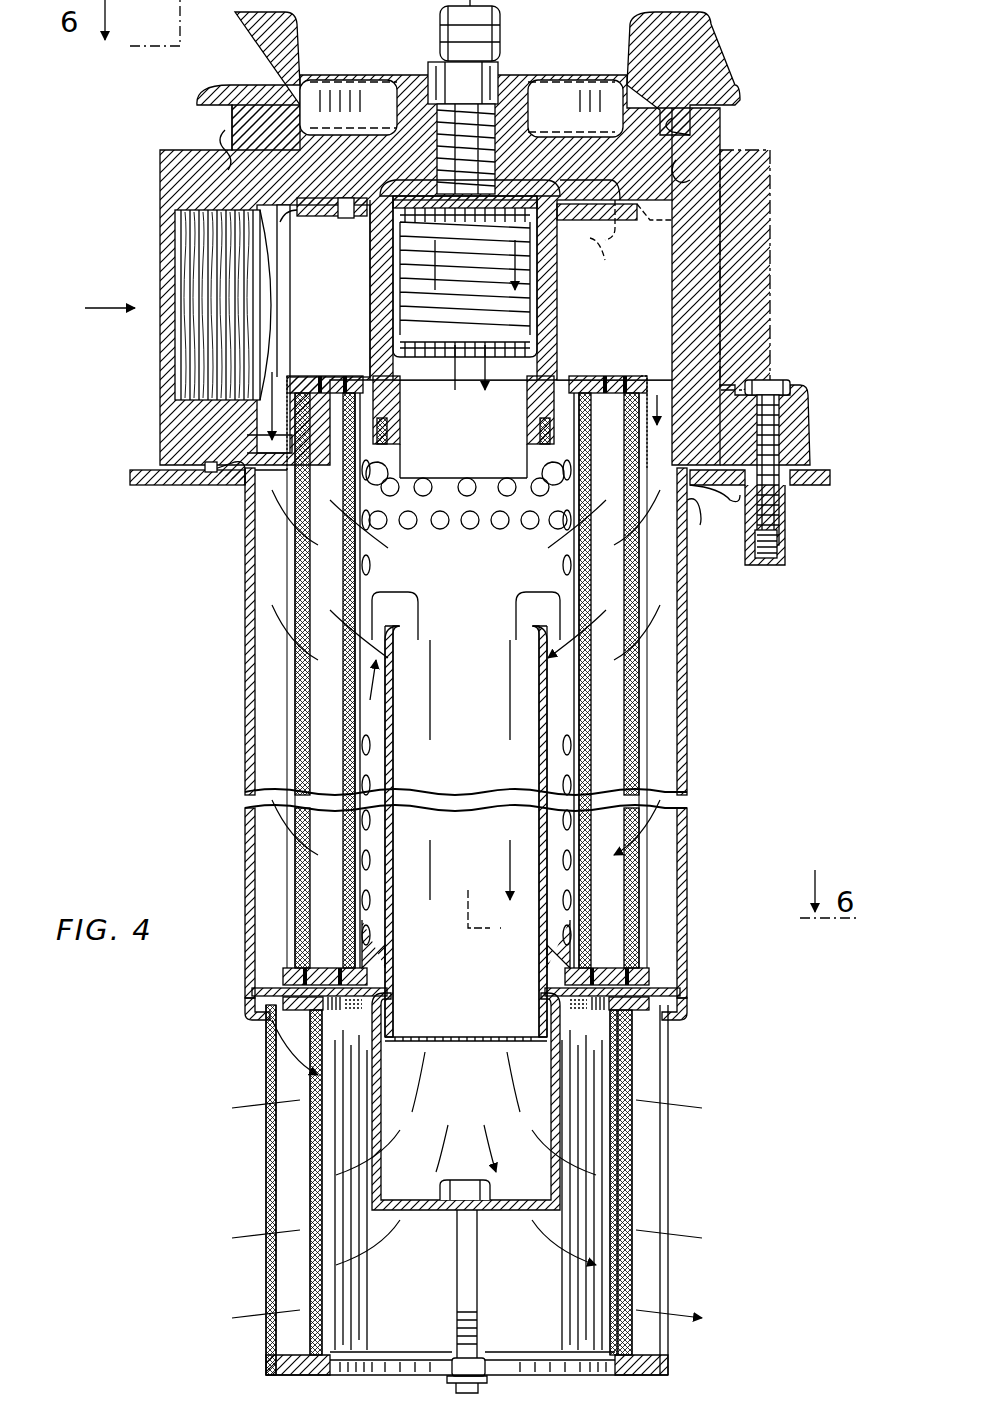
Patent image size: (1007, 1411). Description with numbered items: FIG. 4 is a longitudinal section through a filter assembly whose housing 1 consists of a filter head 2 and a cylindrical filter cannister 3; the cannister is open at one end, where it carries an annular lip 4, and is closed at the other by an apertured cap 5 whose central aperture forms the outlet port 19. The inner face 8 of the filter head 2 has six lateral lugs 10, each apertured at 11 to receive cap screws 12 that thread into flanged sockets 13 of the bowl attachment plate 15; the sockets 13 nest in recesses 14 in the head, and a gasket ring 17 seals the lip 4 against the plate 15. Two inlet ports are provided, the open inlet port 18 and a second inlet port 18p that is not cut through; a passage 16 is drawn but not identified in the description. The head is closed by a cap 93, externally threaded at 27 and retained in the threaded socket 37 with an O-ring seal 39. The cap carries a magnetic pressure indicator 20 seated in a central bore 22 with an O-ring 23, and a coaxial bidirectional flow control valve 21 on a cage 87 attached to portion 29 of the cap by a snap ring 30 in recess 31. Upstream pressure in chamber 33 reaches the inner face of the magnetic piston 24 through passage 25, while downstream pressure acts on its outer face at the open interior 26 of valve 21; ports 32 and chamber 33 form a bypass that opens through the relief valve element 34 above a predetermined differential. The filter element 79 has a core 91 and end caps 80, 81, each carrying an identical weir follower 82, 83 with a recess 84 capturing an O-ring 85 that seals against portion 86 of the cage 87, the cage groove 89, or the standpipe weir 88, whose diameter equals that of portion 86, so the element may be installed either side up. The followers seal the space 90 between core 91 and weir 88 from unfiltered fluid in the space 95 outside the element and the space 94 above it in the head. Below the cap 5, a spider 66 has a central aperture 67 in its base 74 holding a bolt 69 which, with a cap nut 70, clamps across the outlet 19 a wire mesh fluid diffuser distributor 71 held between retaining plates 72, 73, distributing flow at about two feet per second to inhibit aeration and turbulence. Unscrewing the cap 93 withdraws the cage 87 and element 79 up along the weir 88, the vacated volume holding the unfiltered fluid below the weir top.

The housing 1 is at (772, 270).
The filter head 2 is at (712, 250).
The filter cannister 3 is at (690, 752).
The annular flange or lip 4 is at (695, 510).
The apertured cap 5 is at (668, 988).
The inner face of the filter head 8 is at (805, 462).
The lateral lugs 10 is at (800, 420).
The aperture of lug 11 is at (795, 420).
The cap screws 12 is at (765, 385).
The flanged sockets 13 is at (787, 536).
The recesses 14 is at (722, 505).
The bowl attachment plate 15 is at (160, 490).
The inlet passage 16 is at (290, 496).
The gasket ring 17 is at (228, 472).
The inlet port 18 is at (200, 348).
The inlet port 18p is at (770, 300).
The outlet port 19 is at (462, 1044).
The magnetic pressure indicator 20 is at (512, 42).
The coaxial bidirectional flow control valve 21 is at (562, 296).
The central bore 22 is at (500, 140).
The O-ring 23 is at (528, 120).
The magnetic piston 24 is at (415, 100).
The passage 25 is at (363, 108).
The open interior 26 is at (530, 212).
The external thread 27 is at (686, 134).
The portion of the cap 29 is at (640, 225).
The snap ring 30 is at (322, 220).
The recess 31 is at (300, 222).
The ports 32 is at (582, 222).
The chamber 33 is at (400, 200).
The relief valve element 34 is at (560, 192).
The threaded socket 37 is at (255, 135).
The O-ring seal 39 is at (690, 170).
The spider 66 is at (568, 1152).
The central aperture 67 is at (448, 1225).
The bolt 69 is at (452, 1332).
The cap nut 70 is at (490, 1365).
The fluid diffuser distributor 71 is at (266, 1246).
The retaining plate 72 is at (655, 1375).
The retaining plate 73 is at (332, 1030).
The base of spider 74 is at (518, 1225).
The filter element 79 is at (642, 680).
The end cap 80 is at (625, 374).
The end cap 81 is at (688, 975).
The weir follower 82 is at (350, 425).
The weir follower 83 is at (345, 940).
The recess 84 is at (380, 428).
The O-ring 85 is at (540, 445).
The portion of the cage 86 is at (388, 474).
The cage 87 is at (548, 330).
The weir 88 is at (400, 668).
The groove 89 is at (542, 474).
The space 90 is at (548, 676).
The core 91 is at (358, 588).
The cap 93 is at (700, 55).
The space 94 is at (330, 338).
The space 95 is at (272, 660).